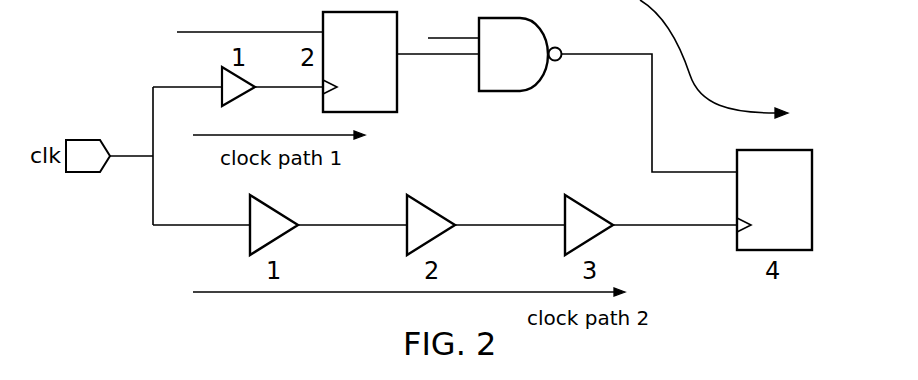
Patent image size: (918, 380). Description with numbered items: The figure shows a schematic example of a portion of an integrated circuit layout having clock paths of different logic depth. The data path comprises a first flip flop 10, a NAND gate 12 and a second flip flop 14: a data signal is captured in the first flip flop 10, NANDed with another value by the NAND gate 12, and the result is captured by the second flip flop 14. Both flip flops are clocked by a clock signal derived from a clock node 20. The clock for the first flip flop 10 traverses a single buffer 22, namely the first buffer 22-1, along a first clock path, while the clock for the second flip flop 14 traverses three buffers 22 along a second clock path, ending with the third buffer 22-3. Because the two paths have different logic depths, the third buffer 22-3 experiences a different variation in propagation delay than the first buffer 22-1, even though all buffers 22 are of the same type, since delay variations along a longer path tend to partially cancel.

The first flip flop 10 is at (398, 26).
The NAND gate 12 is at (541, 26).
The second flip flop 14 is at (813, 185).
The clock node 20 is at (88, 158).
The buffer 22 is at (280, 206).
The first buffer 22-1 is at (243, 96).
The third buffer 22-3 is at (598, 208).